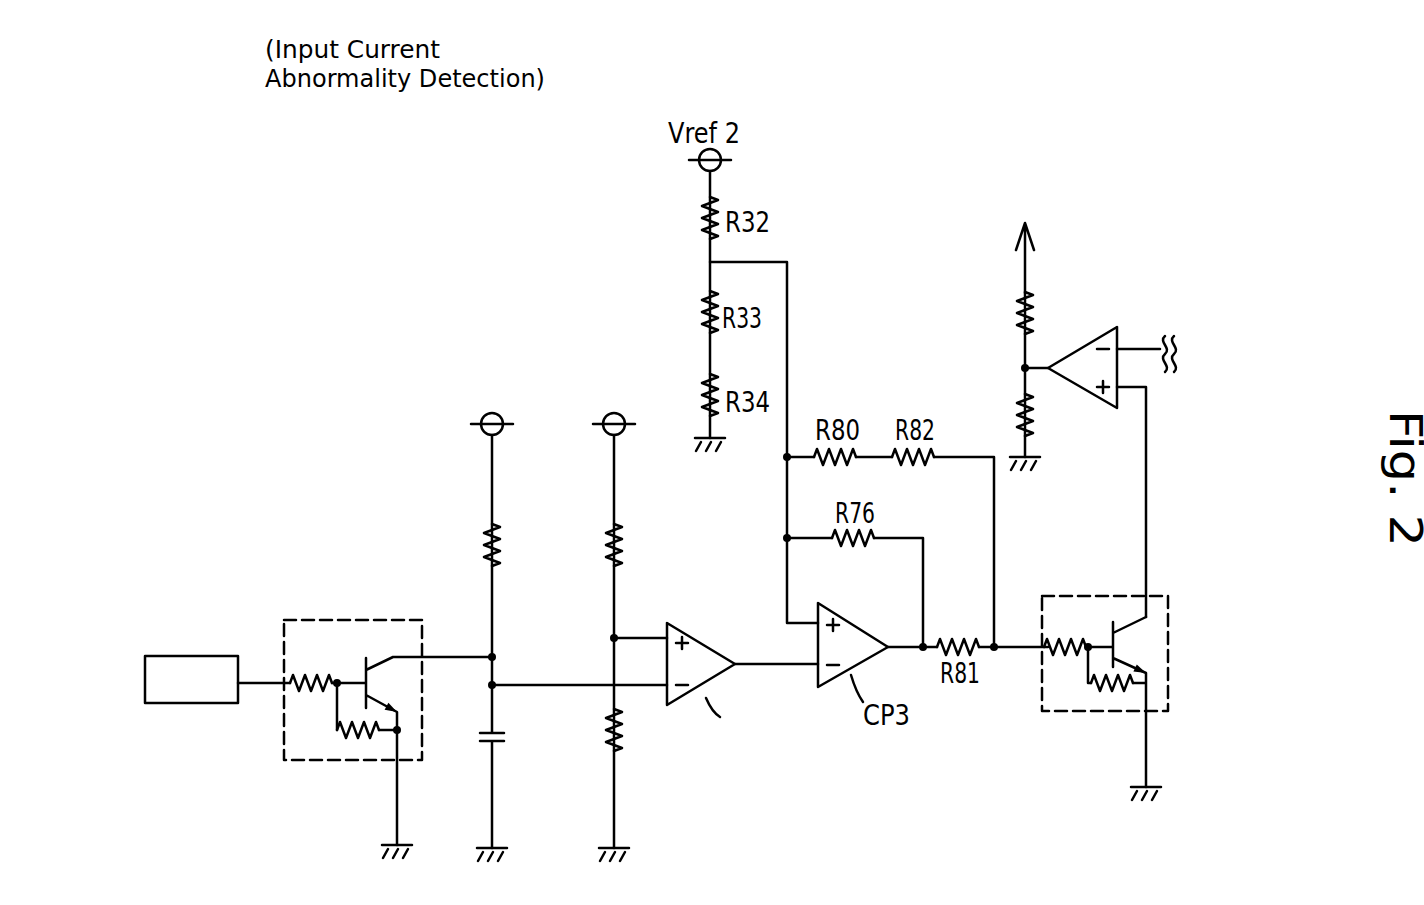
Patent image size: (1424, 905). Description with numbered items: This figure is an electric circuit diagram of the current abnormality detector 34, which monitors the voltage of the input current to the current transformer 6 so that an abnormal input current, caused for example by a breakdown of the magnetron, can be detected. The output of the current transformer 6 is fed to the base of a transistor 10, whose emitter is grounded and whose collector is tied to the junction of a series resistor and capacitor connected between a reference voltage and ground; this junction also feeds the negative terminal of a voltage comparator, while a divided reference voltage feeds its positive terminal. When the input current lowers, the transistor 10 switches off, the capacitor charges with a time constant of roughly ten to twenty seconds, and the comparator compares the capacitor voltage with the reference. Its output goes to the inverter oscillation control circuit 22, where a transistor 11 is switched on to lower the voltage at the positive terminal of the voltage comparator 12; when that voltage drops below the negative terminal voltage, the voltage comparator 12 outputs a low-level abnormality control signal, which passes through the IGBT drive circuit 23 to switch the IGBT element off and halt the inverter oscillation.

The current transformer 6 is at (188, 650).
The transistor 10 is at (357, 612).
The transistor 11 is at (1162, 585).
The voltage comparator 12 is at (1100, 327).
The inverter oscillation control circuit 22 is at (1177, 467).
The IGBT drive circuit 23 is at (1033, 236).
The current abnormality detector 34 is at (297, 463).